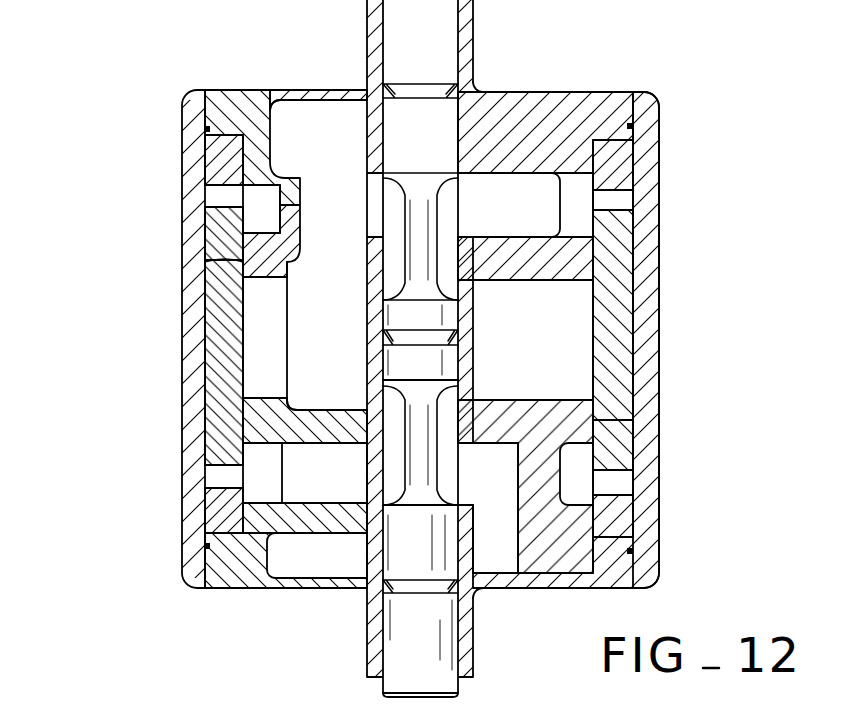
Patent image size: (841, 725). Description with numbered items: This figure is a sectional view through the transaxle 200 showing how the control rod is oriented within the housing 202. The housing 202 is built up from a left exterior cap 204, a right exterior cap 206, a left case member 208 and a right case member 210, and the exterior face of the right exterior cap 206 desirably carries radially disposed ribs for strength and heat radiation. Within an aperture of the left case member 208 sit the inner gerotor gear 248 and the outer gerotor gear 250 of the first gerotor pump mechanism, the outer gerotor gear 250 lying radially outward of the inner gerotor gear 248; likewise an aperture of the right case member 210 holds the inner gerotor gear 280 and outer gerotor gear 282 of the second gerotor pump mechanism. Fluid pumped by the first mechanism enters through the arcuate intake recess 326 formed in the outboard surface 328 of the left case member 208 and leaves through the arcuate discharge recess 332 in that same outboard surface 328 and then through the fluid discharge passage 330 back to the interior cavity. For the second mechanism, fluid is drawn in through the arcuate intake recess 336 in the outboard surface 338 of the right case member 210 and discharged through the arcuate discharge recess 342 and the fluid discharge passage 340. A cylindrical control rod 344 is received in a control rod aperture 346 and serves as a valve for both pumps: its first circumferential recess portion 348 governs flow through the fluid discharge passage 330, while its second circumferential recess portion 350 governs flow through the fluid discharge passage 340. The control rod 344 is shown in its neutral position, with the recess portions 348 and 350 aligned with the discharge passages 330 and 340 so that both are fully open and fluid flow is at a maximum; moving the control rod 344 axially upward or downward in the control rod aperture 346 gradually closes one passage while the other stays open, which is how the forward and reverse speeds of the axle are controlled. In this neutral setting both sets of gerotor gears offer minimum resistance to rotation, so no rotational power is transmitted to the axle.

The transaxle 200 is at (123, 120).
The housing 202 is at (600, 90).
The left exterior cap 204 is at (185, 105).
The right exterior cap 206 is at (648, 160).
The left case member 208 is at (238, 98).
The right case member 210 is at (510, 100).
The inner gerotor gear 248 is at (213, 238).
The outer gerotor gear 250 is at (213, 162).
The inner gerotor gear 280 is at (620, 320).
The outer gerotor gear 282 is at (620, 173).
The arcuate intake recess 326 is at (270, 205).
The outboard surface 328 is at (217, 262).
The fluid discharge passage 330 is at (320, 487).
The arcuate discharge recess 332 is at (263, 462).
The arcuate intake recess 336 is at (577, 476).
The outboard surface 338 is at (648, 420).
The fluid discharge passage 340 is at (490, 187).
The arcuate discharge recess 342 is at (570, 212).
The control rod 344 is at (462, 690).
The control rod aperture 346 is at (392, 652).
The first circumferential recess portion 348 is at (397, 405).
The second circumferential recess portion 350 is at (393, 235).